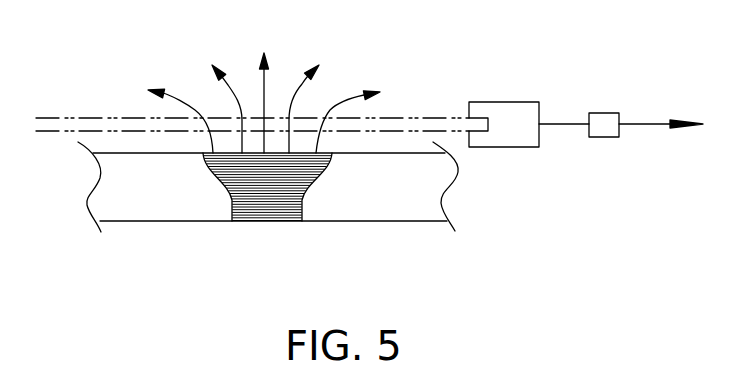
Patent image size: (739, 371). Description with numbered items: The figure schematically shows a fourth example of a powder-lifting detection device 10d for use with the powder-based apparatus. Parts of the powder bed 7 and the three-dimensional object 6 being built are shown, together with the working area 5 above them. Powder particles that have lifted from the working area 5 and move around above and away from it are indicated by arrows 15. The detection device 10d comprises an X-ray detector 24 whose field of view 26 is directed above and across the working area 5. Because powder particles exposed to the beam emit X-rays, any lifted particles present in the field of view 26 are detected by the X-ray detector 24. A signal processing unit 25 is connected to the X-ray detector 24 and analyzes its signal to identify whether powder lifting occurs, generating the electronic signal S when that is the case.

The working area 5 is at (223, 153).
The three-dimensional object 6 is at (269, 207).
The powder bed 7 is at (158, 205).
The arrows 15 is at (347, 97).
The X-ray detector 24 is at (506, 114).
The signal processing unit 25 is at (600, 121).
The field of view 26 is at (418, 117).
The powder-lifting detection device 10d is at (612, 214).